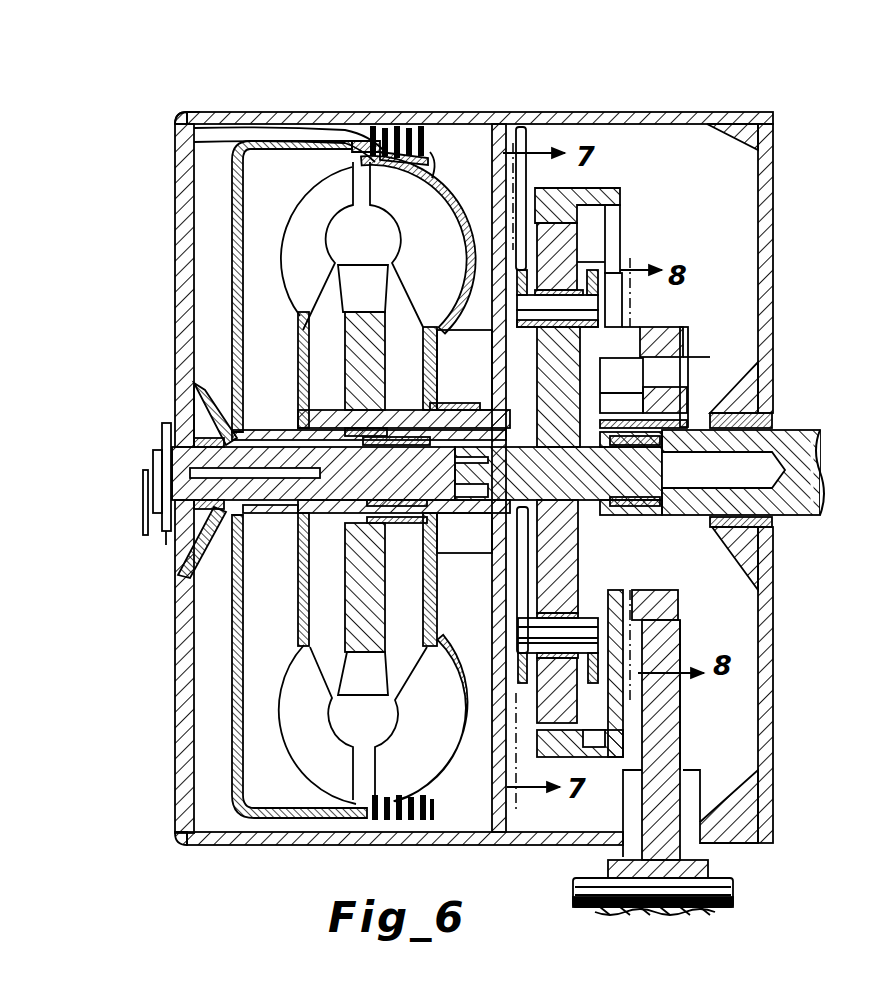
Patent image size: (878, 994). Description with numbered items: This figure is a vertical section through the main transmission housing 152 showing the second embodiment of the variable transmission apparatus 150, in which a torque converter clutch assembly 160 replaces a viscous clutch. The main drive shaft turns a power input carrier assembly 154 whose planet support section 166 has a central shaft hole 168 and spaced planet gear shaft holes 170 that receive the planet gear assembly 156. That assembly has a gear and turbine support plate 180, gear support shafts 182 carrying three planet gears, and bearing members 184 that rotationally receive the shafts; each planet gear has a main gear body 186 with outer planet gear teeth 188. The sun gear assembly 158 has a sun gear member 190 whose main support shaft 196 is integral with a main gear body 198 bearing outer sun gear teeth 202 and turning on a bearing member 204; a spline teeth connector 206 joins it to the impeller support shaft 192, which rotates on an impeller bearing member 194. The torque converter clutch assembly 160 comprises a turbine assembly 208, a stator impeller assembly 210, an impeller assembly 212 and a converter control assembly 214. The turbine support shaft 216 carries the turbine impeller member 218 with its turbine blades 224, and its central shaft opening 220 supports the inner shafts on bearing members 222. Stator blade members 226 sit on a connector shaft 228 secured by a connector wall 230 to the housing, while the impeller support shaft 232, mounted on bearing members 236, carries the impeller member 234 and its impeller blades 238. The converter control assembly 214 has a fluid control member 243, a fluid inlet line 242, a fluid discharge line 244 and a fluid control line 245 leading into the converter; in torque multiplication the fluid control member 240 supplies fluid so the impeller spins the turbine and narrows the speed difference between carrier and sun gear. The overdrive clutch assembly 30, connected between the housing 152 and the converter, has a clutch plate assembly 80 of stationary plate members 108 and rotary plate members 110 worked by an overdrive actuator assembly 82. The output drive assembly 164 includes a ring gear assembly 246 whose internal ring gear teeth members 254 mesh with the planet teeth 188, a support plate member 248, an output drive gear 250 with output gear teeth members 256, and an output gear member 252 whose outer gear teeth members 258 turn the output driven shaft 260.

The overdrive clutch assembly 30 is at (350, 160).
The clutch plate assembly 80 is at (353, 173).
The overdrive actuator assembly 82 is at (183, 122).
The stationary plate members 108 is at (388, 128).
The rotary plate members 110 is at (416, 128).
The variable transmission apparatus 150 is at (762, 195).
The main transmission housing 152 is at (775, 118).
The power input carrier assembly 154 is at (780, 427).
The planet gear assembly 156 is at (590, 228).
The sun gear assembly 158 is at (783, 493).
The torque converter clutch assembly 160 is at (437, 173).
The output drive assembly 164 is at (720, 867).
The planet support section 166 is at (683, 343).
The central shaft hole 168 is at (667, 363).
The planet gear shaft holes 170 is at (655, 224).
The gear and turbine support plate 180 is at (460, 241).
The gear support shafts 182 is at (460, 267).
The plate 184 is at (620, 253).
The main gear body 186 is at (565, 690).
The outer planet gear teeth 188 is at (542, 723).
The sun gear member 190 is at (642, 572).
The impeller support shaft 192 is at (330, 442).
The impeller bearing member 194 is at (383, 385).
The main support shaft 196 is at (620, 473).
The main gear body 198 is at (510, 407).
The outer sun gear teeth 202 is at (632, 612).
The bearing member 204 is at (640, 408).
The spline teeth connector 206 is at (470, 543).
The turbine assembly 208 is at (292, 330).
The stator impeller assembly 210 is at (338, 303).
The impeller assembly 212 is at (180, 185).
The converter control assembly 214 is at (143, 500).
The turbine support shaft 216 is at (333, 545).
The turbine impeller member 218 is at (228, 197).
The central shaft opening 220 is at (305, 420).
The bearing members 222 is at (300, 356).
The turbine blades 224 is at (342, 735).
The stator blade members 226 is at (378, 237).
The connector shaft 228 is at (430, 352).
The connector wall 230 is at (492, 735).
The impeller support shaft 232 is at (228, 503).
The impeller member 234 is at (435, 218).
The bearing members 236 is at (200, 395).
The impeller blades 238 is at (392, 772).
The fluid control member 240 is at (232, 530).
The fluid inlet line 242 is at (172, 425).
The fluid control member 243 is at (165, 425).
The fluid discharge line 244 is at (168, 535).
The fluid control line 245 is at (190, 377).
The ring gear assembly 246 is at (583, 192).
The support plate member 248 is at (580, 250).
The output drive gear 250 is at (650, 320).
The output gear member 252 is at (762, 640).
The internal ring gear teeth members 254 is at (585, 765).
The output gear teeth members 256 is at (650, 330).
The outer gear teeth members 258 is at (690, 632).
The output driven shaft 260 is at (727, 887).